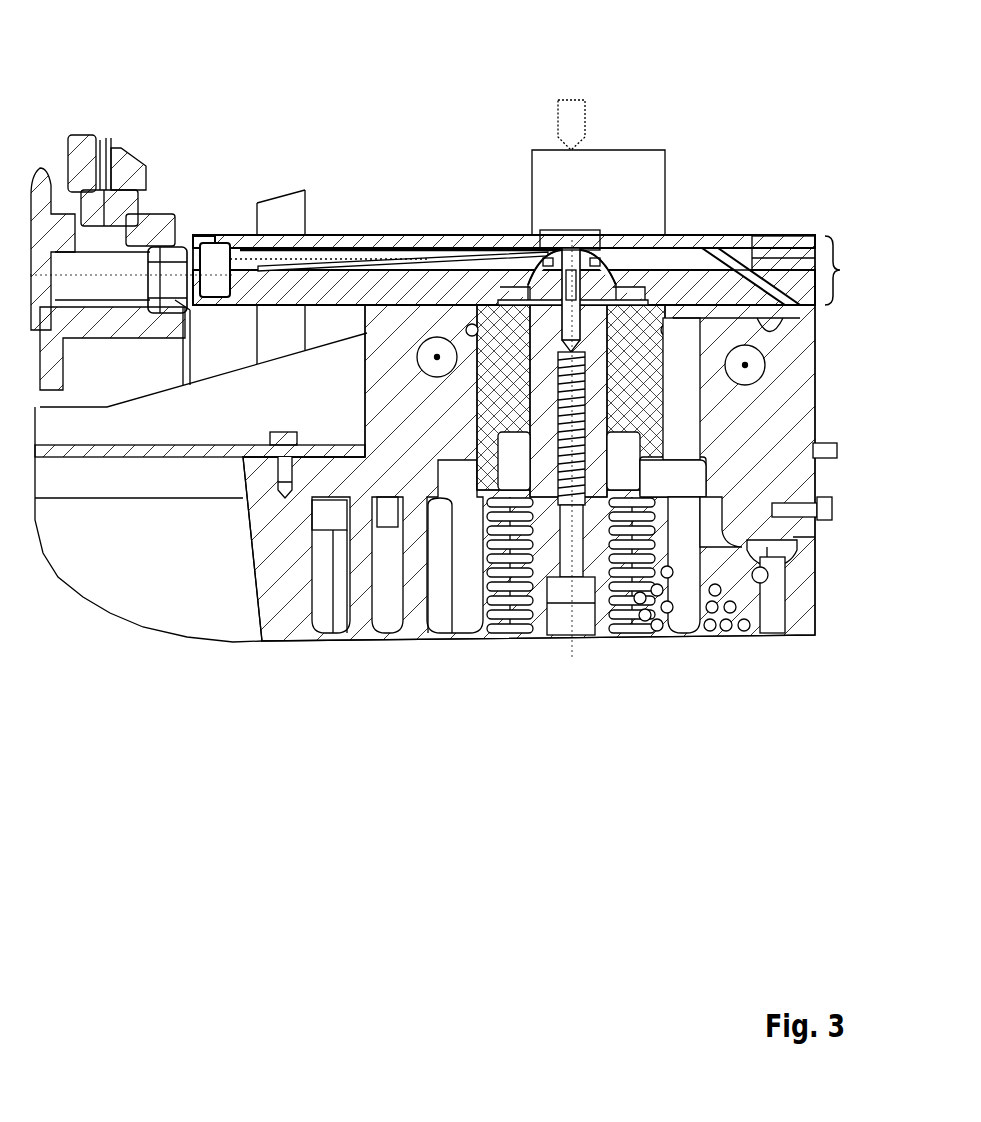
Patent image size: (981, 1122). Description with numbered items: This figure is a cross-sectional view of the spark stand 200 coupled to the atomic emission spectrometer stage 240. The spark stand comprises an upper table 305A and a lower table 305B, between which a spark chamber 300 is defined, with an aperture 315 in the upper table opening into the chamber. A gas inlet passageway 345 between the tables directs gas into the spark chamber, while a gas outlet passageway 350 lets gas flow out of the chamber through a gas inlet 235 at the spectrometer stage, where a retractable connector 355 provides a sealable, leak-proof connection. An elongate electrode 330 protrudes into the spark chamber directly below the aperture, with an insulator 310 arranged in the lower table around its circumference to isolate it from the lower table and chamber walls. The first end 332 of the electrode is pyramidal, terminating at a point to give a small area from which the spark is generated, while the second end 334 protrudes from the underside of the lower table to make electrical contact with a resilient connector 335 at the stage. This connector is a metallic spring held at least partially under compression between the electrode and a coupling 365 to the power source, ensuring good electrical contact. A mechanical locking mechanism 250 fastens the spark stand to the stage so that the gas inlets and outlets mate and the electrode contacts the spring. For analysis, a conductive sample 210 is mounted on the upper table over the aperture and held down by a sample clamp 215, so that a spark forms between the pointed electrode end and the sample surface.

The spark stand 200 is at (547, 158).
The conductive sample 210 is at (595, 192).
The sample clamp 215 is at (570, 121).
The gas inlet 235 is at (803, 305).
The atomic emission spectrometer stage 240 is at (757, 507).
The mechanical locking mechanism 250 is at (437, 357).
The spark chamber 300 is at (584, 237).
The upper table 305A is at (760, 242).
The lower table 305B is at (660, 277).
The insulator 310 is at (545, 247).
The aperture 315 is at (553, 233).
The electrode 330 is at (700, 290).
The first end 332 is at (566, 245).
The second end 334 is at (756, 272).
The resilient connector 335 is at (578, 396).
The gas inlet passageway 345 is at (431, 252).
The gas outlet passageway 350 is at (688, 253).
The retractable connector 355 is at (199, 255).
The coupling 365 is at (575, 595).